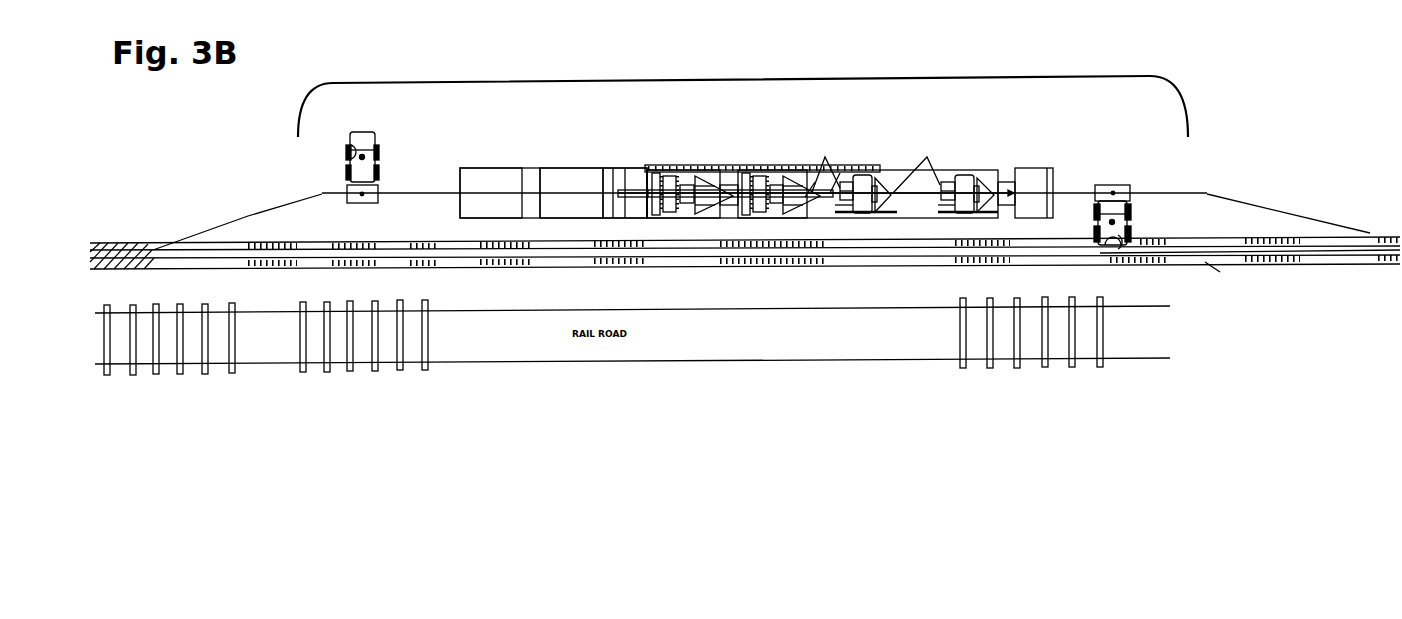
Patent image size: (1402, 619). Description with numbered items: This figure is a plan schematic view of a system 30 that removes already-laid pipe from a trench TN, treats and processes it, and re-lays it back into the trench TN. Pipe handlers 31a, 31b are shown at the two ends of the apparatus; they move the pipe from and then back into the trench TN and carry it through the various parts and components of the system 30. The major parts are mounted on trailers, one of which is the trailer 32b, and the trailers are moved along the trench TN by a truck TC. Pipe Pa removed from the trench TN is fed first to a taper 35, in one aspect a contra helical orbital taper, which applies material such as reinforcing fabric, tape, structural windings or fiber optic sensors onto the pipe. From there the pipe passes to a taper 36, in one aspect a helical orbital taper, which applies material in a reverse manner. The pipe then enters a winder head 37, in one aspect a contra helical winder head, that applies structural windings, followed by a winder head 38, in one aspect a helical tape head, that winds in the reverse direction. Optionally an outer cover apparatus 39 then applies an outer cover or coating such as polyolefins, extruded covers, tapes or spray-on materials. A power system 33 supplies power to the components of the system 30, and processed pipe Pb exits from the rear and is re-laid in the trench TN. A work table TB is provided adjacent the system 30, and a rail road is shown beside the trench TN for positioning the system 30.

The system 30 is at (767, 153).
The pipe handler 31a is at (1113, 185).
The pipe handler 31b is at (368, 139).
The trailer 32b is at (574, 172).
The power system 33 is at (488, 176).
The taper 35 is at (963, 168).
The taper 36 is at (871, 172).
The winder head 37 is at (773, 175).
The winder head 38 is at (686, 175).
The outer cover apparatus 39 is at (625, 175).
The work table TB is at (773, 84).
The truck TC is at (1042, 172).
The trench TN is at (118, 256).
The pipe Pa is at (1256, 206).
The processed pipe Pb is at (253, 212).